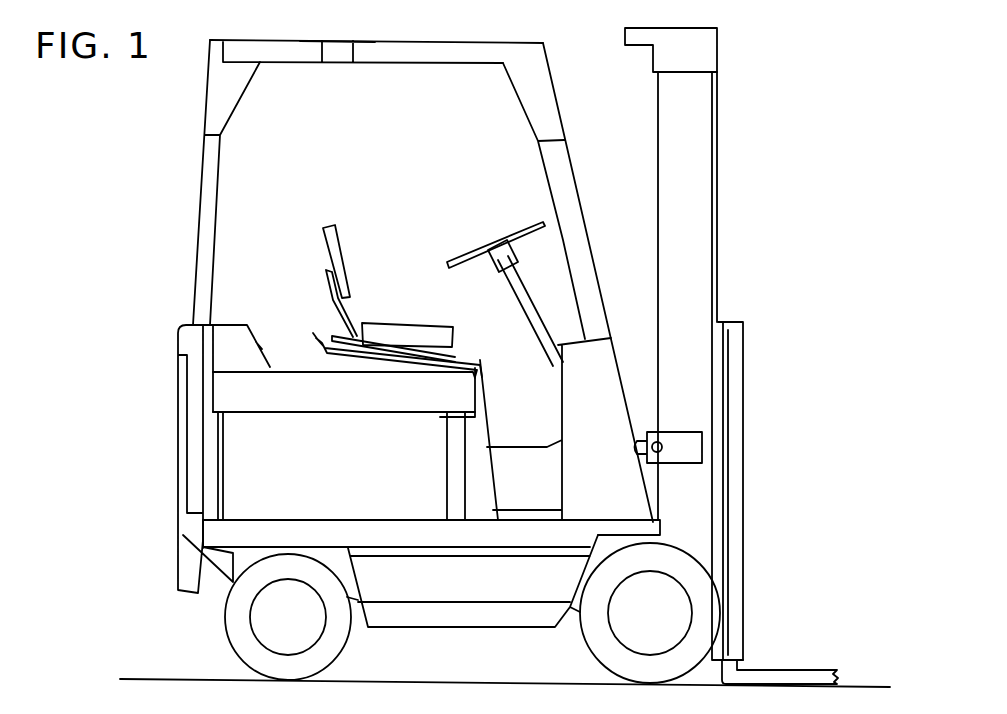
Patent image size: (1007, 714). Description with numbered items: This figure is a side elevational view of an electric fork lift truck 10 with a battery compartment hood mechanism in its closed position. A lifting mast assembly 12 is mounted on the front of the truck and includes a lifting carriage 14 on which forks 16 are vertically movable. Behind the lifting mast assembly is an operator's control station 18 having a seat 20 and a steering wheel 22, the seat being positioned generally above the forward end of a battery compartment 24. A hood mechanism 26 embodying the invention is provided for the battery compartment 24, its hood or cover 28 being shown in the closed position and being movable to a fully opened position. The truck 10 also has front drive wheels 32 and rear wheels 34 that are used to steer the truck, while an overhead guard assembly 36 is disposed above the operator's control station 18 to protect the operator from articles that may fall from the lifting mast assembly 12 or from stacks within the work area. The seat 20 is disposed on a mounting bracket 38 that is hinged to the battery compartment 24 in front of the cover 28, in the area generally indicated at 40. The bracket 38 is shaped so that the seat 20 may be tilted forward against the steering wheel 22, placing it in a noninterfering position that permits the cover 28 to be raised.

The electric fork lift truck 10 is at (180, 153).
The lifting mast assembly 12 is at (737, 225).
The lifting carriage 14 is at (737, 452).
The forks 16 is at (782, 675).
The operator's control station 18 is at (392, 142).
The seat 20 is at (372, 315).
The steering wheel 22 is at (527, 222).
The battery compartment 24 is at (240, 473).
The hood mechanism 26 is at (250, 315).
The hood or cover 28 is at (287, 378).
The front drive wheels 32 is at (600, 643).
The rear wheels 34 is at (237, 622).
The overhead guard assembly 36 is at (313, 35).
The mounting bracket 38 is at (462, 358).
The hinge area 40 is at (483, 412).